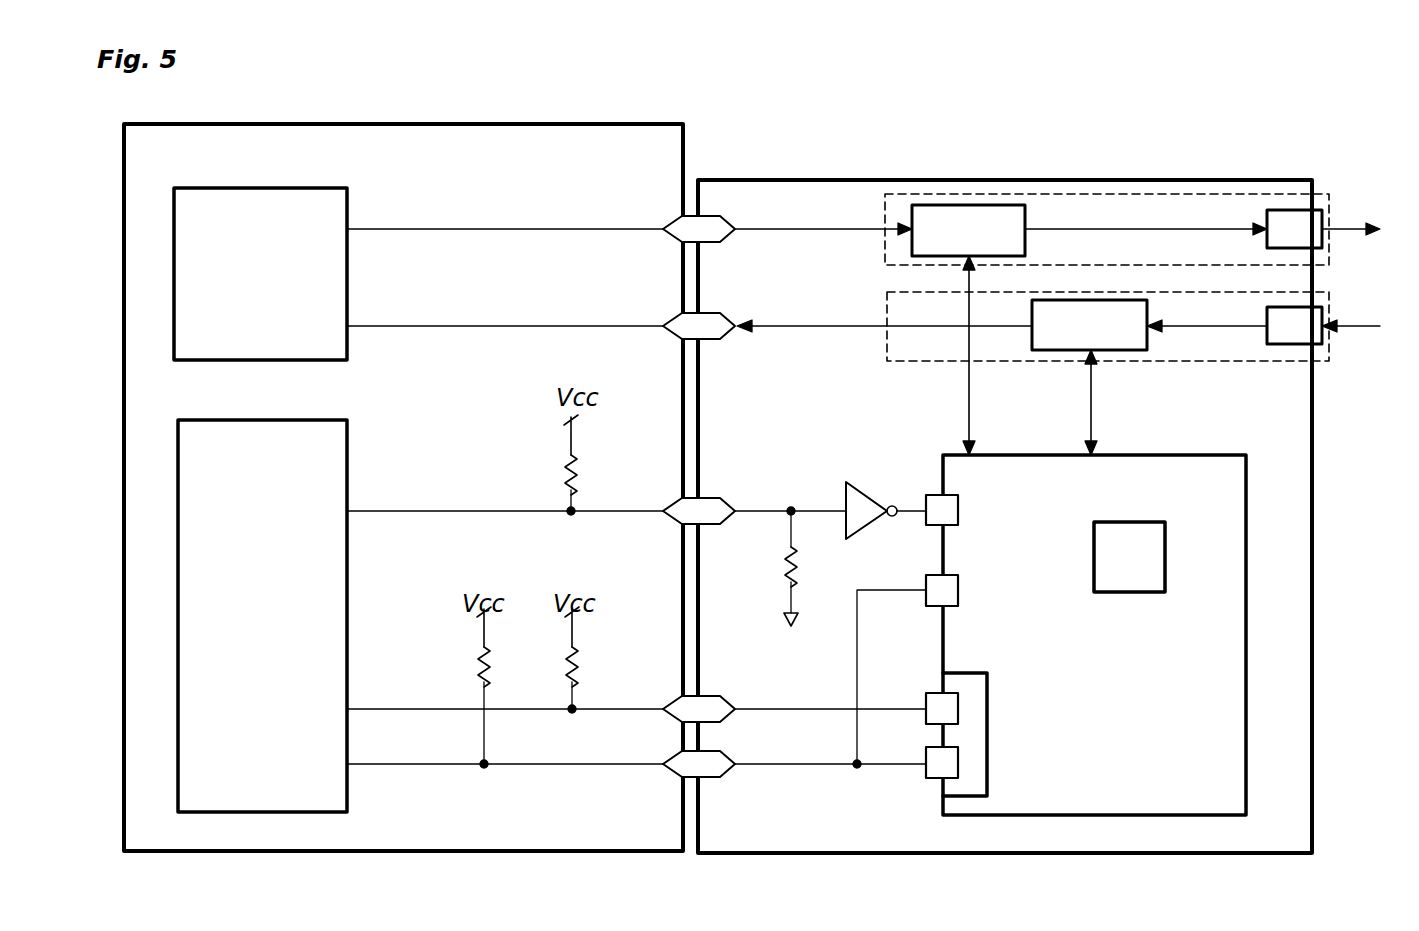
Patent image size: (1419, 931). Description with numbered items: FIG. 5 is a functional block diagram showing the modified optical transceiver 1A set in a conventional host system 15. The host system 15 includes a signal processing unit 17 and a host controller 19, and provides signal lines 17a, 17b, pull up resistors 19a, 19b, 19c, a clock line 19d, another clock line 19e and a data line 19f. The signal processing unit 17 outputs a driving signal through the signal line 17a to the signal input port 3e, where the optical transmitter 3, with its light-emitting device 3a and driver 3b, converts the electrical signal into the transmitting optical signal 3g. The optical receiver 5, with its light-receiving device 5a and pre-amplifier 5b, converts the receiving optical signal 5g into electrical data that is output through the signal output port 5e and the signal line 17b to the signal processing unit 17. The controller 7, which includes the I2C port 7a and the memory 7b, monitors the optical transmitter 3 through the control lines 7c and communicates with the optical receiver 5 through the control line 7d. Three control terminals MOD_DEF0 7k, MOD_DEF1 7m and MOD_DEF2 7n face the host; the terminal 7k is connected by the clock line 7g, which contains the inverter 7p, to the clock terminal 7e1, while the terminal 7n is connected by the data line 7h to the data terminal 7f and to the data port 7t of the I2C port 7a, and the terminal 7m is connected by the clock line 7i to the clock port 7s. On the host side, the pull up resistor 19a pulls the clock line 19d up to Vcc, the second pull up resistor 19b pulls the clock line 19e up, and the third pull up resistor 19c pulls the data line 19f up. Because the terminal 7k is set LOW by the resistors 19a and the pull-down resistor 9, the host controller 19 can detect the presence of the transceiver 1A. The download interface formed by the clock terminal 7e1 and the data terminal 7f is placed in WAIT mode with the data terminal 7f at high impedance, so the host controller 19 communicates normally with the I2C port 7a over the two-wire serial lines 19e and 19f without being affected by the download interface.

The host system 15 is at (683, 124).
The modified optical transceiver 1A is at (823, 180).
The signal processing unit 17 is at (347, 202).
The signal line 17a is at (528, 229).
The signal line 17b is at (516, 326).
The host controller 19 is at (347, 442).
The pull up resistor 19a is at (566, 475).
The second pull up resistor 19b is at (574, 672).
The third pull up resistor 19c is at (481, 670).
The clock line 19d is at (457, 511).
The clock line 19e is at (648, 709).
The data line 19f is at (565, 764).
The optical transmitter 3 is at (1118, 194).
The light-emitting device 3a is at (1290, 210).
The driver 3b is at (968, 205).
The signal input port 3e is at (705, 216).
The optical signal 3g is at (1354, 229).
The optical receiver 5 is at (888, 293).
The light-receiving device 5a is at (1290, 344).
The pre-amplifier (TIA) 5b is at (1116, 350).
The signal output port 5e is at (705, 313).
The receiving optical signal 5g is at (1354, 326).
The controller 7 is at (1246, 481).
The I2C port 7a is at (987, 677).
The memory 7b is at (1165, 557).
The control lines 7c is at (969, 398).
The control line 7d is at (1091, 398).
The clock terminal 7e1 is at (958, 510).
The data terminal 7f is at (958, 590).
The clock line 7g is at (753, 511).
The data line 7h is at (857, 662).
The clock line 7i is at (762, 709).
The MOD_DEF0 control terminal 7k is at (700, 542).
The MOD_DEF1 control terminal 7m is at (704, 696).
The MOD_DEF2 control terminal 7n is at (700, 777).
The inverter 7p is at (859, 482).
The clock port 7s is at (926, 724).
The data port 7t is at (930, 782).
The pull-down resistor 9 is at (785, 575).